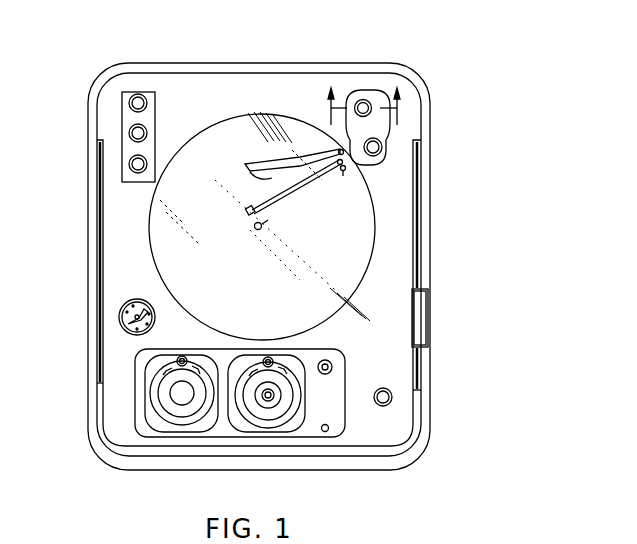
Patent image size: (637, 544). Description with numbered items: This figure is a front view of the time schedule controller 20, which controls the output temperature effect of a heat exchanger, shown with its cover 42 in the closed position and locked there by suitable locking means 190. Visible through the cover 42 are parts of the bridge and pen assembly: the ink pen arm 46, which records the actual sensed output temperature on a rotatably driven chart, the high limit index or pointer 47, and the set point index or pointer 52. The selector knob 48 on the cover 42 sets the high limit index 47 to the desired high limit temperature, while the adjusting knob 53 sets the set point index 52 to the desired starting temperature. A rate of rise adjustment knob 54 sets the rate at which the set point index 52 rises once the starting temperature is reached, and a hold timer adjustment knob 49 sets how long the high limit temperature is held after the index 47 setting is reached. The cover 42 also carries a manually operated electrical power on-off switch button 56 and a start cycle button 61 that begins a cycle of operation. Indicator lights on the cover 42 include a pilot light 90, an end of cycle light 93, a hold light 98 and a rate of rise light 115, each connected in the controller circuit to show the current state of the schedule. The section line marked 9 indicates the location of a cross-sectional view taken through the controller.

The time schedule controller 20 is at (462, 214).
The cover 42 is at (402, 279).
The ink pen arm 46 is at (286, 200).
The high limit index 47 is at (264, 162).
The selector knob 48 is at (363, 99).
The hold timer adjustment knob 49 is at (276, 400).
The set point index 52 is at (250, 175).
The adjusting knob 53 is at (383, 146).
The rate of rise adjustment knob 54 is at (181, 400).
The electrical power on-off switch button 56 is at (334, 366).
The start cycle button 61 is at (270, 393).
The pilot light 90 is at (330, 428).
The end of cycle light 93 is at (129, 103).
The hold light 98 is at (129, 133).
The rate of rise light 115 is at (129, 164).
The locking means 190 is at (393, 396).
The section line 9- 9 is at (361, 106).